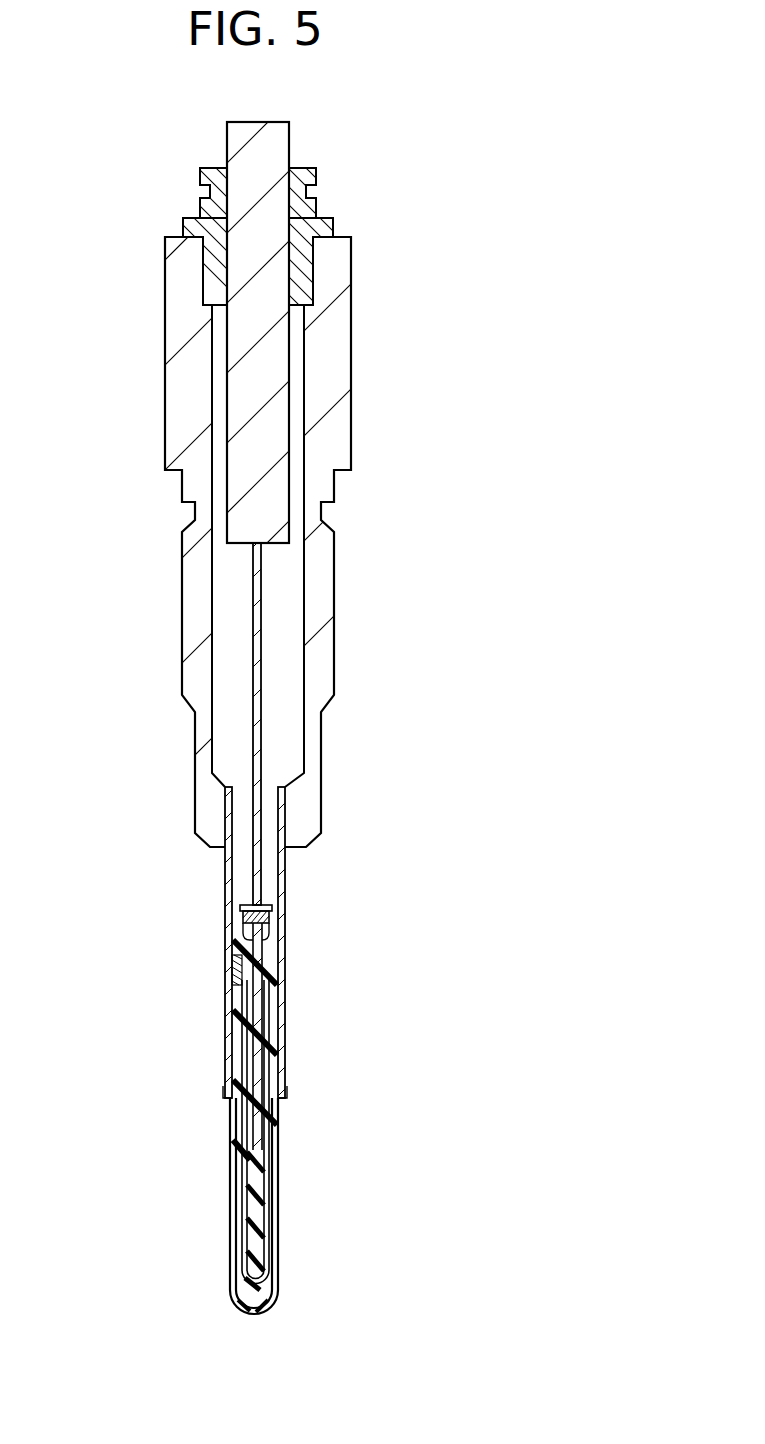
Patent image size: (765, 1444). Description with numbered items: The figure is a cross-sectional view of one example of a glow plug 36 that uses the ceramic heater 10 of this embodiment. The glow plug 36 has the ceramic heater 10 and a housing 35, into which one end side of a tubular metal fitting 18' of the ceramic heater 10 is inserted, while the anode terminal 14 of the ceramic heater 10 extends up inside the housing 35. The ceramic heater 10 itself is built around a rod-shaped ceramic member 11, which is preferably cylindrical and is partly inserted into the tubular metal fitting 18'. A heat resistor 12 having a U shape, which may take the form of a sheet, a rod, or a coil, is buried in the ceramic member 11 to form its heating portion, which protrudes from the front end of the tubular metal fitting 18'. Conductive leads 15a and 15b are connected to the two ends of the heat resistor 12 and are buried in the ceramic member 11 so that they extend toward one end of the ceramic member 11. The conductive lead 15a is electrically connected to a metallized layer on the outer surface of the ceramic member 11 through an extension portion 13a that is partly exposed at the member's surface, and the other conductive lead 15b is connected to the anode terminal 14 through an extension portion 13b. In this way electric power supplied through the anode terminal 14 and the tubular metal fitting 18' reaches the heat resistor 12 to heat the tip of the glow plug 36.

The glow plug 36 is at (366, 338).
The housing 35 is at (322, 568).
The anode terminal 14 is at (257, 772).
The extension portion 13b is at (240, 909).
The tubular metal fitting 18' is at (167, 962).
The extension portion 13a is at (232, 975).
The conductive lead 15b is at (285, 1068).
The conductive lead 15a is at (270, 1133).
The ceramic member 11 is at (275, 1205).
The heat resistor 12 is at (275, 1276).
The ceramic heater 10 is at (271, 1147).